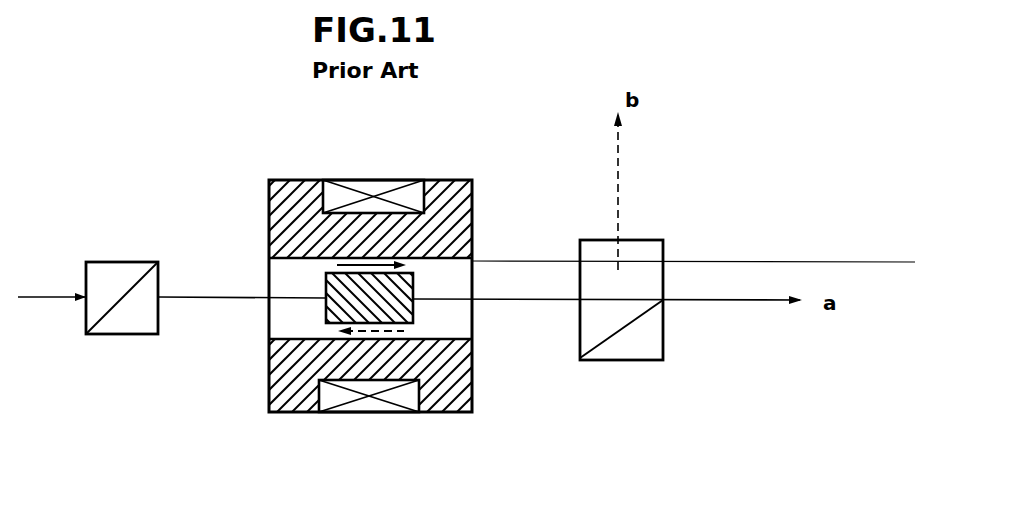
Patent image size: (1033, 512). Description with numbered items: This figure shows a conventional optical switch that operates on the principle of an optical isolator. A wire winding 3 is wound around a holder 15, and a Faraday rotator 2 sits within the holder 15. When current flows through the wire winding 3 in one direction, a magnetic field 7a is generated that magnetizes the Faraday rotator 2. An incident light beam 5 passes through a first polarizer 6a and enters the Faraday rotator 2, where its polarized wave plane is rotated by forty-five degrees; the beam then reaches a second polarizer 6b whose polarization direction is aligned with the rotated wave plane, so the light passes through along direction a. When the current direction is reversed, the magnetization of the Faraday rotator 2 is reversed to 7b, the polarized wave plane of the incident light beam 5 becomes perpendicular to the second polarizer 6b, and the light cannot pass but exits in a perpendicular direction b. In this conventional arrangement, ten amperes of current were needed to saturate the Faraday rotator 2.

The incident light beam 5 is at (27, 296).
The first polarizer 6a is at (122, 261).
The second polarizer 6b is at (657, 262).
The wire winding 3 is at (350, 181).
The magnetic field 7a is at (363, 262).
The reversed magnetization direction 7b is at (363, 333).
The Faraday rotator 2 is at (415, 312).
The holder 15 is at (470, 375).